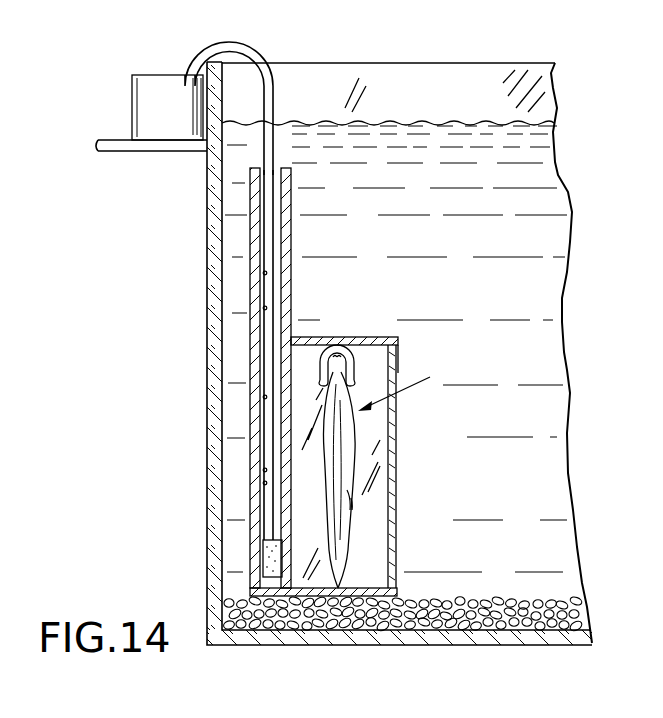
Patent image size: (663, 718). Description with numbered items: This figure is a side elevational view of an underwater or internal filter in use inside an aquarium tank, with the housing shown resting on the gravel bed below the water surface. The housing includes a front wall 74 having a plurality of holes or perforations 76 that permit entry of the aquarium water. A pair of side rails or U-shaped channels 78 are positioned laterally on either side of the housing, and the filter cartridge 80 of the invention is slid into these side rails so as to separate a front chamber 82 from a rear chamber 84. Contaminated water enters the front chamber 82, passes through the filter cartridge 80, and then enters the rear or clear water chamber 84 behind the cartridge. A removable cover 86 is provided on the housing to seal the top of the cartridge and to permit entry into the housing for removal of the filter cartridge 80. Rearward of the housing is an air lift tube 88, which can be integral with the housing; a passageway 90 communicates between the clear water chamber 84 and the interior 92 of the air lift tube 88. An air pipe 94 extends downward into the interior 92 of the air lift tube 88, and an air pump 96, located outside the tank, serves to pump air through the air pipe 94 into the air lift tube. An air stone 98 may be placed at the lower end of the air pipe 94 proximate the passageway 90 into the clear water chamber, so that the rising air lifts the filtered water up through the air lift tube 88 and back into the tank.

The front wall 74 is at (398, 452).
The holes or perforations 76 is at (354, 418).
The side rails or U-shaped channels 78 is at (353, 506).
The filter cartridge 80 is at (411, 383).
The front chamber 82 is at (378, 527).
The rear chamber 84 is at (312, 355).
The removable cover 86 is at (358, 338).
The air lift tube 88 is at (253, 243).
The passageway 90 is at (315, 592).
The interior of the air lift tube 92 is at (262, 168).
The air pipe 94 is at (250, 52).
The air pump 96 is at (150, 97).
The air stone 98 is at (282, 508).